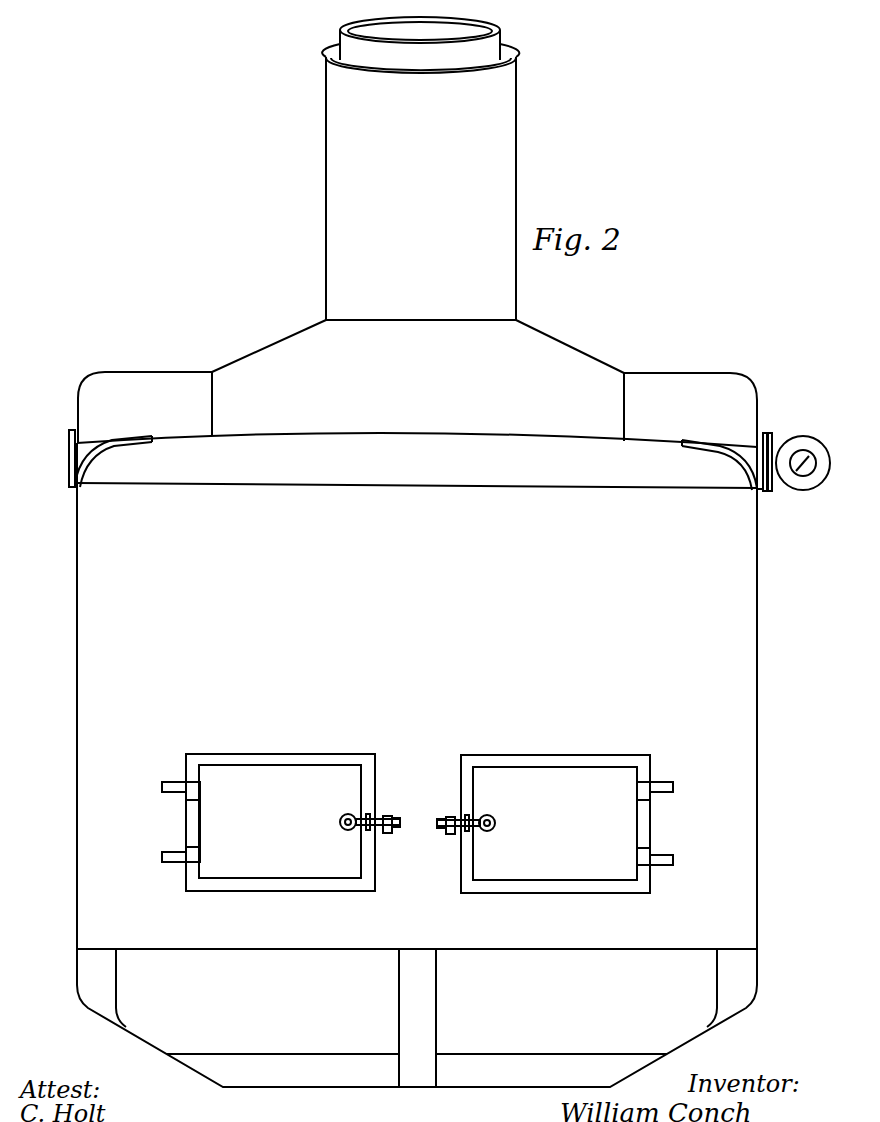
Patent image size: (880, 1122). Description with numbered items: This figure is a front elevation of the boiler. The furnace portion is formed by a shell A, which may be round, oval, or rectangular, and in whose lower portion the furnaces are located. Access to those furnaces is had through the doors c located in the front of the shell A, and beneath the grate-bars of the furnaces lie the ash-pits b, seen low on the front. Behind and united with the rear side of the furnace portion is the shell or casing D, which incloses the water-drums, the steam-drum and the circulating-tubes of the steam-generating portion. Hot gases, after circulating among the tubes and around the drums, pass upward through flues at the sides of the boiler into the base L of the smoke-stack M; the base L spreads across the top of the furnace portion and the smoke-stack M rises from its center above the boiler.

The smoke-stack m is at (420, 168).
The base of the smoke-stack L is at (417, 383).
The shell A is at (449, 707).
The doors c is at (417, 823).
The shell or casing D is at (76, 963).
The ash-pits b is at (416, 1018).